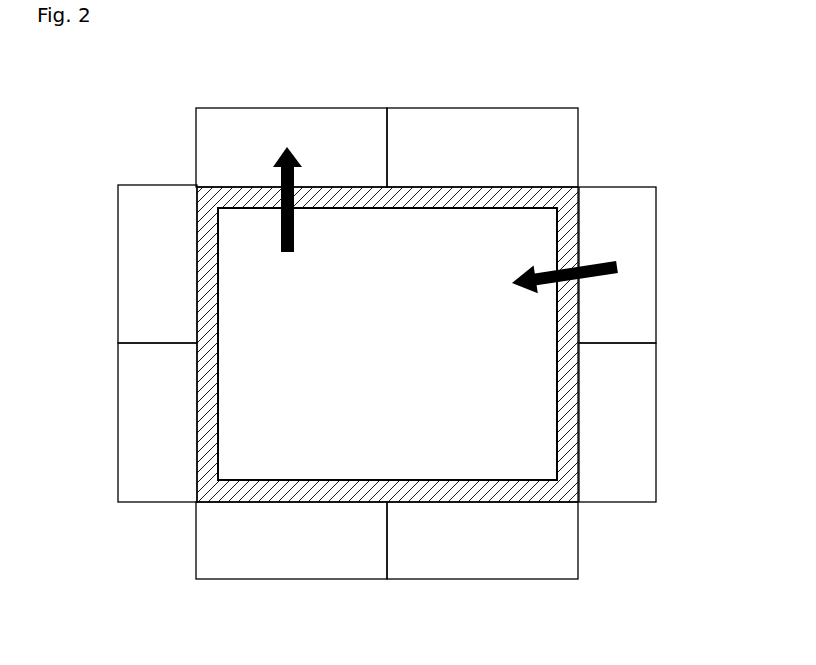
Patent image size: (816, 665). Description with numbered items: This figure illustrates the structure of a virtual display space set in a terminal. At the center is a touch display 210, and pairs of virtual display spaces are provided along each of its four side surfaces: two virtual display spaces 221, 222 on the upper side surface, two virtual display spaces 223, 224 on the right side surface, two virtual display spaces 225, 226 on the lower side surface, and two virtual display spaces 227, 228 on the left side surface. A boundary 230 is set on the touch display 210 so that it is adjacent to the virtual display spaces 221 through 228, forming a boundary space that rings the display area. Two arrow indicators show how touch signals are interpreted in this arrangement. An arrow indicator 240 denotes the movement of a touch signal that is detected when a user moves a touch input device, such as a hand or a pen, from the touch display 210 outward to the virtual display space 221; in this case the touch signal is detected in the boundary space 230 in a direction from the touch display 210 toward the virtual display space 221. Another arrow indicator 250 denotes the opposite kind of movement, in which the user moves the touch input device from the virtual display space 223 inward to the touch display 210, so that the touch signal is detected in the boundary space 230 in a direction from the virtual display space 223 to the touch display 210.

The touch display 210 is at (432, 320).
The virtual display space 221 is at (295, 108).
The virtual display space 222 is at (478, 108).
The virtual display space 223 is at (656, 258).
The virtual display space 224 is at (656, 418).
The virtual display space 225 is at (482, 580).
The virtual display space 226 is at (296, 580).
The virtual display space 227 is at (118, 423).
The virtual display space 228 is at (118, 265).
The boundary 230 is at (382, 205).
The arrow indicator 240 is at (285, 254).
The arrow indicator 250 is at (512, 286).